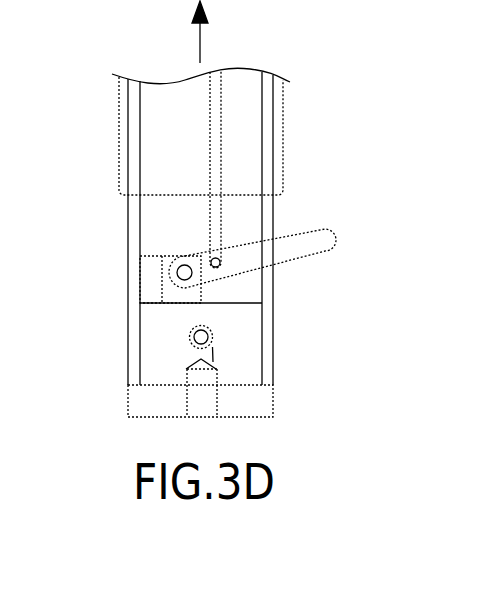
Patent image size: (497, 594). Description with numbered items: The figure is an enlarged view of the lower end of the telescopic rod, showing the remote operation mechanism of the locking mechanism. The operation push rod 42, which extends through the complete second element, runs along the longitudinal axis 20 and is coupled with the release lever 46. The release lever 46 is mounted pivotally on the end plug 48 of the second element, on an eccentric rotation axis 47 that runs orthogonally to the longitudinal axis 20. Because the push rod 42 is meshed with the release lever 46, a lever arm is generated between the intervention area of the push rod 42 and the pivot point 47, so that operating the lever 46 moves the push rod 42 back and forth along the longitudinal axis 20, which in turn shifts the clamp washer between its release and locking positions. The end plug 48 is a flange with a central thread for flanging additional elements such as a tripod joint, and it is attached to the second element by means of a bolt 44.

The longitudinal axis 20 is at (198, 39).
The operation push rod 42 is at (250, 116).
The bolt 44 is at (190, 333).
The release lever 46 is at (322, 229).
The eccentric rotation axis 47 is at (169, 276).
The end plug 48 is at (265, 402).